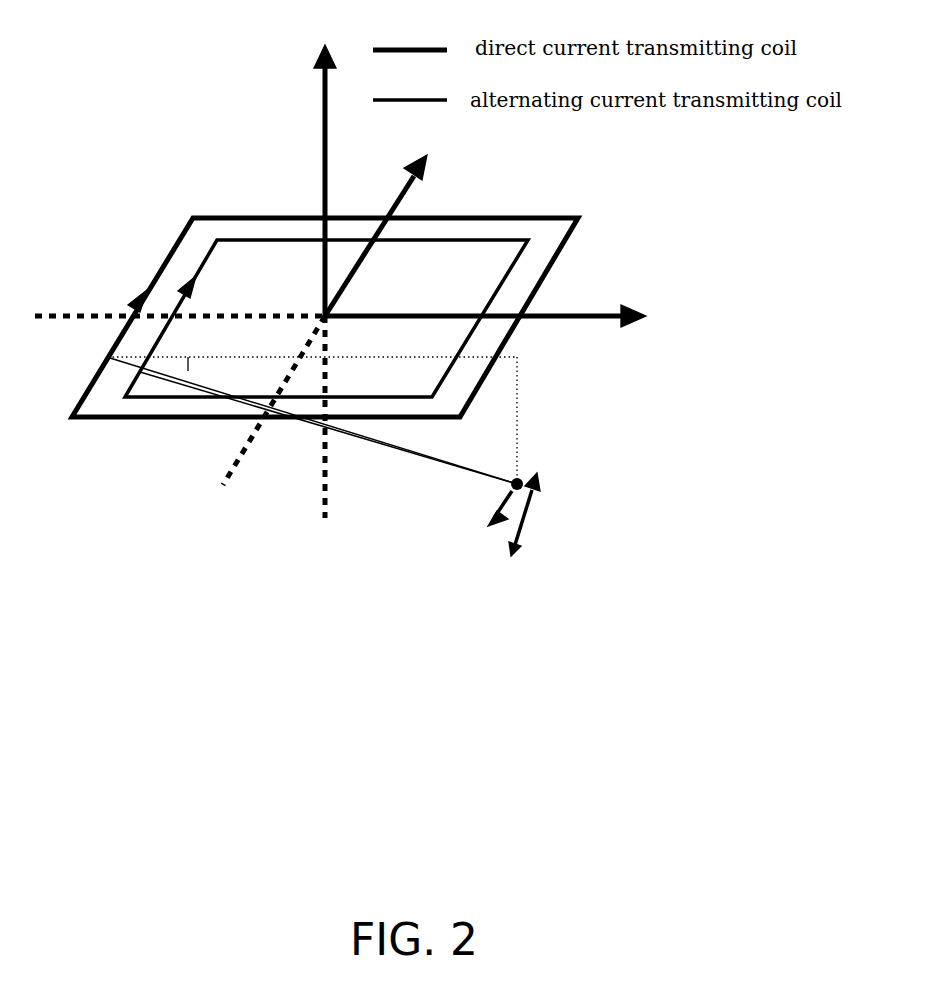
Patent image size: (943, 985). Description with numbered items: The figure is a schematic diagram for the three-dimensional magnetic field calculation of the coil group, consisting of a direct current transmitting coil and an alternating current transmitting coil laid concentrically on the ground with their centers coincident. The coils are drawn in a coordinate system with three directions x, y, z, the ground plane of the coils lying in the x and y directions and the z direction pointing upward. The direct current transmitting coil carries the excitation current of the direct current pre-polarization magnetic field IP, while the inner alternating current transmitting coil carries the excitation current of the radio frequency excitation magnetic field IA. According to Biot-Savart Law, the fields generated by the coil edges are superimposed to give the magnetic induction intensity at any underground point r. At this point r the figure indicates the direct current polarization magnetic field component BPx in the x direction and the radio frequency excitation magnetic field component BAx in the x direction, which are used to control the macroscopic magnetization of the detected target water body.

The x direction x is at (348, 316).
The y direction y is at (333, 315).
The z direction z is at (325, 269).
The excitation current of the direct current pre-polarization magnetic field IP is at (325, 317).
The excitation current of the radio frequency excitation magnetic field IA is at (326, 318).
The point r is at (555, 462).
The direct current polarization magnetic field component in the x direction BPx is at (477, 505).
The radio frequency excitation magnetic field component in the x direction BAx is at (541, 514).